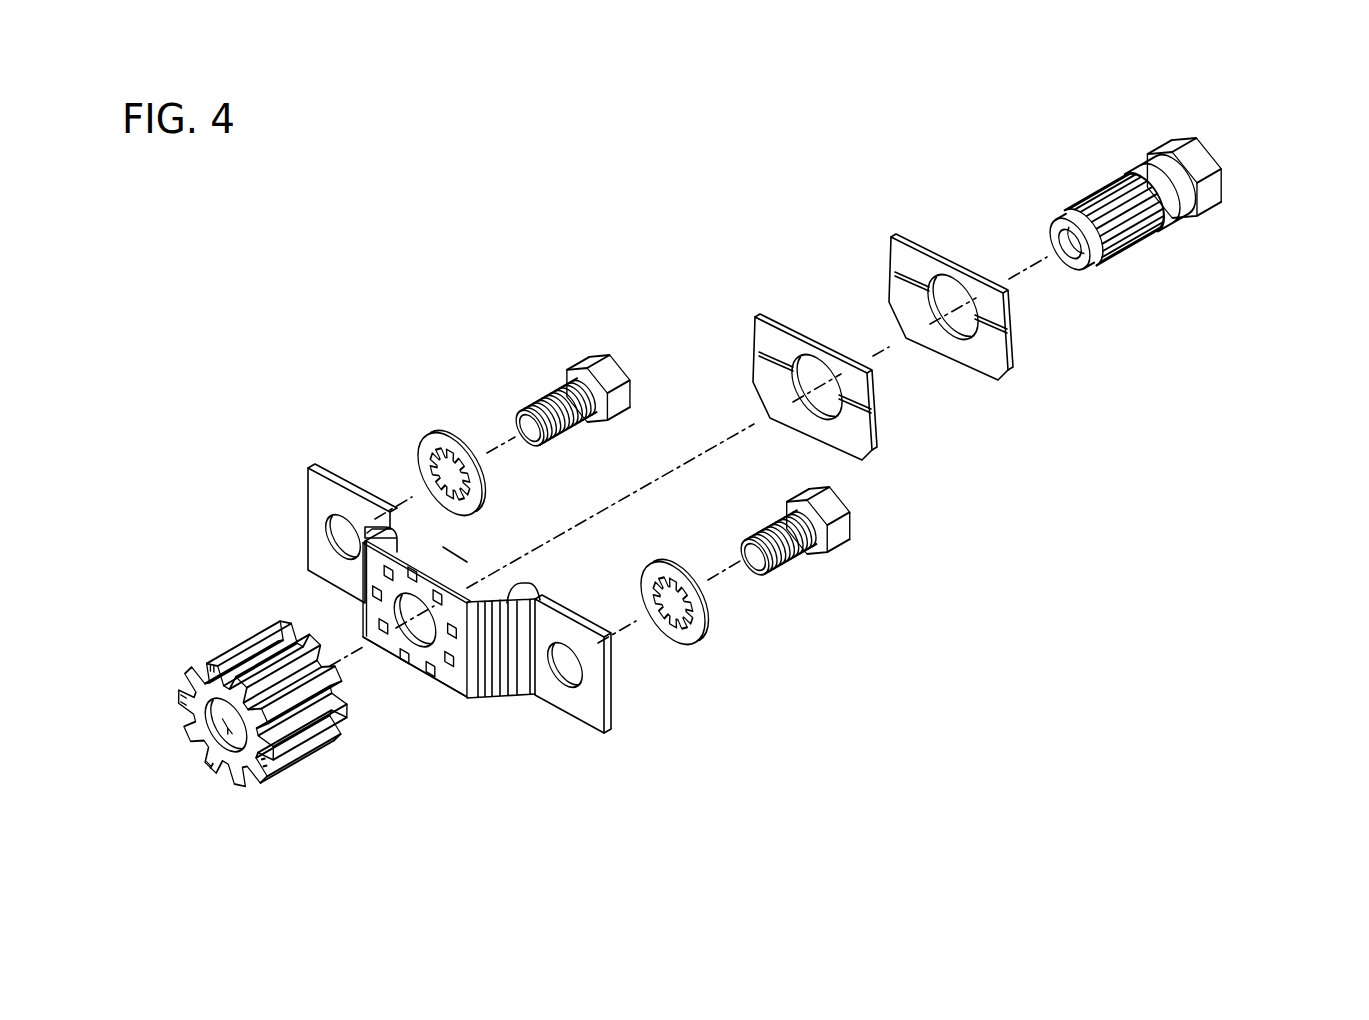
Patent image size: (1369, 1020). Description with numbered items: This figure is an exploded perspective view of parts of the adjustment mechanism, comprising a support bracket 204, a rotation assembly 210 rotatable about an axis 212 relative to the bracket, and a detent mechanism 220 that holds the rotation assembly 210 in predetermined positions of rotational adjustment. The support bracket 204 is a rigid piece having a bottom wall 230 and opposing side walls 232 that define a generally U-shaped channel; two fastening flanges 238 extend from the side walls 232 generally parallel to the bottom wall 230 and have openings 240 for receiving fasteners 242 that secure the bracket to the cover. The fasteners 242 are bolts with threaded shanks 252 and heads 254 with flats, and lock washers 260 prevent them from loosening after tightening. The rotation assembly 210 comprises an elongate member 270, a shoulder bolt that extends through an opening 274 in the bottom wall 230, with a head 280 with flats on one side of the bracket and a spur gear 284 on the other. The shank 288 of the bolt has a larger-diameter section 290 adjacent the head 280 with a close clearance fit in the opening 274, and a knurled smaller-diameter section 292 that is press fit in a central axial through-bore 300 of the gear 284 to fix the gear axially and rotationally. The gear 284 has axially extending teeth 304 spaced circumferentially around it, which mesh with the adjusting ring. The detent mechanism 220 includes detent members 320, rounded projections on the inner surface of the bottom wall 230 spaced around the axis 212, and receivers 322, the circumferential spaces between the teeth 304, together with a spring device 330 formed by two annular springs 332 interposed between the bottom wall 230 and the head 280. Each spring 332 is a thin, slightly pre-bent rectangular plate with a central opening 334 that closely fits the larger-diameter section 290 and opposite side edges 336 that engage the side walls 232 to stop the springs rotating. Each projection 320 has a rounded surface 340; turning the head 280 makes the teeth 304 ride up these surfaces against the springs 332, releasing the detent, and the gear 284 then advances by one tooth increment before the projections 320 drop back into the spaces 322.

The support bracket 204 is at (479, 618).
The rotation assembly 210 is at (1140, 201).
The axis 212 is at (702, 454).
The detent mechanism 220 is at (440, 706).
The bottom wall 230 is at (443, 547).
The side walls 232 is at (400, 527).
The fastening flanges 238 is at (459, 616).
The openings 240 is at (343, 535).
The fasteners 242 is at (719, 449).
The threaded shanks 252 is at (548, 387).
The heads 254 is at (617, 388).
The lock washers 260 is at (418, 447).
The elongate member 270 is at (1140, 201).
The opening 274 is at (452, 690).
The head 280 is at (1208, 200).
The gear 284 is at (237, 702).
The shank 288 is at (1100, 198).
The larger-diameter section 290 is at (1150, 162).
The smaller-diameter section 292 is at (1043, 237).
The central axial through-bore 300 is at (188, 707).
The teeth 304 is at (225, 650).
The detent members 320 is at (358, 649).
The receivers 322 is at (253, 652).
The spring device 330 is at (914, 322).
The annular springs 332 is at (777, 338).
The central opening 334 is at (837, 400).
The side edges 336 is at (757, 368).
The rounded surface 340 is at (398, 655).